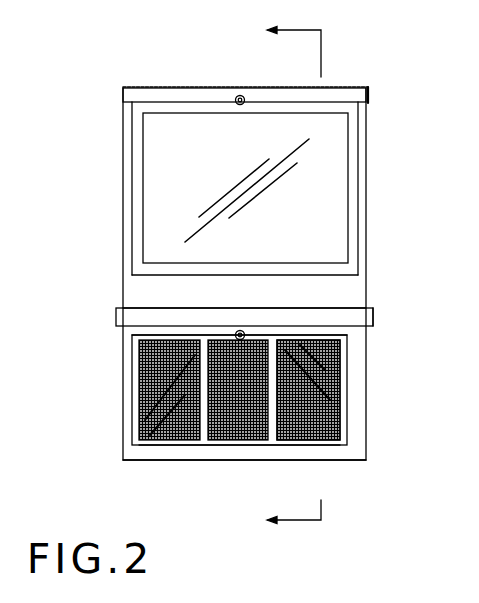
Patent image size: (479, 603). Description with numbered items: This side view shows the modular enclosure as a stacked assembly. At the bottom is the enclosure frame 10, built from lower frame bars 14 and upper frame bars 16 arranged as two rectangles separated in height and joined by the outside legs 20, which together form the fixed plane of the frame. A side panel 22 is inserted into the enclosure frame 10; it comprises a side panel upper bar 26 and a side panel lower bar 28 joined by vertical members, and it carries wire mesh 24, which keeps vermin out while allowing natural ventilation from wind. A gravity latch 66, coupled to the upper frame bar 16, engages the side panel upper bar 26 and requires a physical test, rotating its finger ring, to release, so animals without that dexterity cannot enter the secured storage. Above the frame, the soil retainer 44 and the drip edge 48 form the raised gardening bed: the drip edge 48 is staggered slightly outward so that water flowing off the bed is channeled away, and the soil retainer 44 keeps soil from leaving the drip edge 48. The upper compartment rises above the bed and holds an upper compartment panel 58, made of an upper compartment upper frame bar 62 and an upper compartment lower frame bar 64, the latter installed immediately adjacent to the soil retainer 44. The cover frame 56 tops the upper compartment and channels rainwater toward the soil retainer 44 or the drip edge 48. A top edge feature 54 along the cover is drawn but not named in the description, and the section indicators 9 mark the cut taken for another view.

The section line 9- 9 is at (284, 275).
The enclosure frame 10 is at (113, 391).
The lower frame bars 14 is at (170, 449).
The upper frame bars 16 is at (162, 330).
The outside legs 20 is at (123, 421).
The side panel 22 is at (278, 452).
The wire mesh 24 is at (340, 355).
The side panel upper bar 26 is at (310, 338).
The side panel lower bar 28 is at (248, 445).
The soil retainer 44 is at (135, 270).
The drip edge 48 is at (382, 312).
The top edge 54 is at (290, 80).
The cover frame 56 is at (350, 95).
The upper compartment panel 58 is at (360, 181).
The upper compartment upper frame bar 62 is at (160, 108).
The upper compartment lower frame bar 64 is at (320, 267).
The gravity latch 66 is at (233, 88).